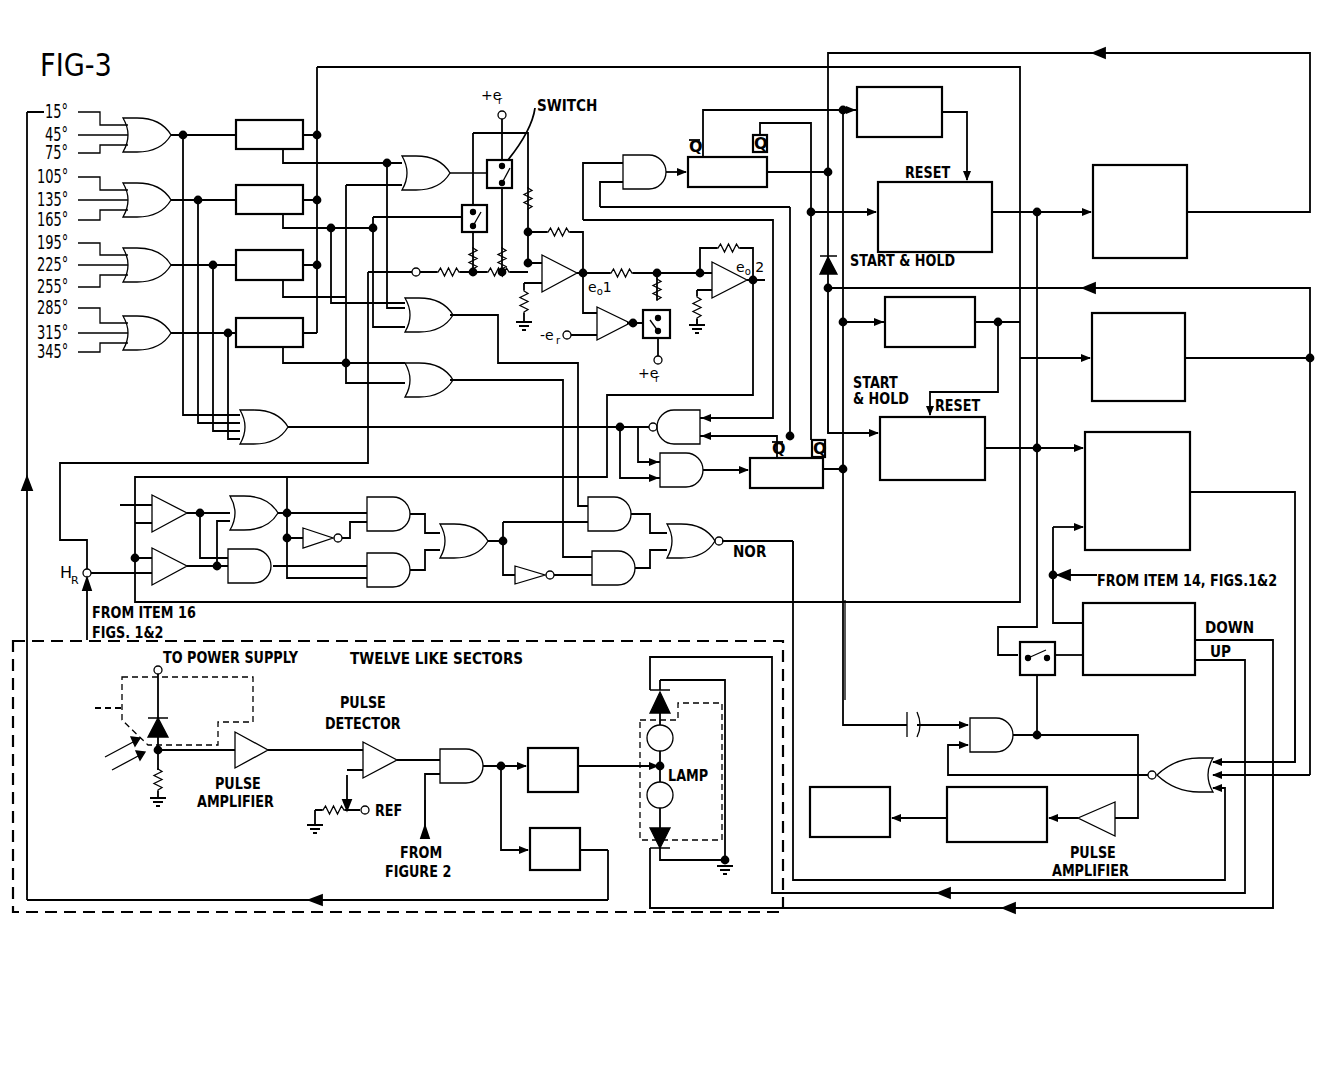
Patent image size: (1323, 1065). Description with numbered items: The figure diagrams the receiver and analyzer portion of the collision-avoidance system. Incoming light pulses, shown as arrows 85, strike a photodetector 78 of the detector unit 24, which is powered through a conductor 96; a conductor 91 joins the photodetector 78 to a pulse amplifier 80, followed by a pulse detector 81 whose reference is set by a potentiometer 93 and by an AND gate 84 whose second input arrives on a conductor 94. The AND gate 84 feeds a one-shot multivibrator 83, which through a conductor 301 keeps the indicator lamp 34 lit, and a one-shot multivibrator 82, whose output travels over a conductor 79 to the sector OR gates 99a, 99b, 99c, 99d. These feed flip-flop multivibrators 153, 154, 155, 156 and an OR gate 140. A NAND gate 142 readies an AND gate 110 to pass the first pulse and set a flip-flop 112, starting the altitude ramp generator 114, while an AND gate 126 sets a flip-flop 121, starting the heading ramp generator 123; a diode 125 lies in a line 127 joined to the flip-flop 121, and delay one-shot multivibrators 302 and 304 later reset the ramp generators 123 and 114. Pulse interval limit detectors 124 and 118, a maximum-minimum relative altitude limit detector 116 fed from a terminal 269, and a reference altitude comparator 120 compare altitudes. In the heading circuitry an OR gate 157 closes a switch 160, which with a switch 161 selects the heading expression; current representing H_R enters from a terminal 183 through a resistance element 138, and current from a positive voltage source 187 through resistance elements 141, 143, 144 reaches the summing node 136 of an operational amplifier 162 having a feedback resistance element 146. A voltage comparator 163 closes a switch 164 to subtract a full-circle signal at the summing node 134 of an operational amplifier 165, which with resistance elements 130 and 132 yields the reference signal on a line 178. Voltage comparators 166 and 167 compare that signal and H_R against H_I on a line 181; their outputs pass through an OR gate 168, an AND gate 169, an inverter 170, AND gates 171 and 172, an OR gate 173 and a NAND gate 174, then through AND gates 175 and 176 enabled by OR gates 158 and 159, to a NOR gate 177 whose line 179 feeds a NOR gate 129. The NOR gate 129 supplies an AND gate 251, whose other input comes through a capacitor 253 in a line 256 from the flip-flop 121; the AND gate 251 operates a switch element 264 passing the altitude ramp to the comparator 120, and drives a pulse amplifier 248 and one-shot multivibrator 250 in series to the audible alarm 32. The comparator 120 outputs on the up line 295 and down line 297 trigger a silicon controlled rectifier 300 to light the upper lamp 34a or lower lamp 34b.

The sector OR gate 99a is at (163, 120).
The sector OR gate 99b is at (155, 187).
The sector OR gate 99c is at (155, 253).
The sector OR gate 99d is at (155, 320).
The flip-flop multivibrator 153 is at (276, 118).
The flip-flop multivibrator 154 is at (276, 184).
The flip-flop multivibrator 155 is at (276, 249).
The flip-flop multivibrator 156 is at (276, 316).
The OR gate 140 is at (288, 426).
The OR gate 157 is at (428, 156).
The OR gate 158 is at (436, 353).
The OR gate 159 is at (449, 388).
The switch 160 is at (512, 165).
The source of positive voltage 187 is at (498, 113).
The switch 161 is at (462, 208).
The resistance element 144 is at (530, 188).
The resistance element 146 is at (558, 228).
The resistance element 141 is at (470, 250).
The resistance element 143 is at (498, 276).
The resistance element 138 is at (443, 276).
The terminal or line 183 is at (418, 270).
The summing node 136 is at (540, 260).
The operational amplifier 162 is at (547, 303).
The voltage comparator 163 is at (613, 340).
The switch 164 is at (670, 345).
The resistance element 132 is at (625, 269).
The summing node 134 is at (688, 272).
The resistance element 130 is at (723, 246).
The operational amplifier 165 is at (719, 311).
The line 178 is at (750, 337).
The AND gate 126 is at (642, 155).
The flip-flop 121 is at (688, 187).
The delay one-shot multivibrator 302 is at (942, 88).
The heading ramp generator 123 is at (992, 182).
The pulse interval limit detector 124 is at (1140, 155).
The diode 125 is at (839, 268).
The line 127 is at (836, 354).
The delay one-shot multivibrator 304 is at (936, 348).
The pulse interval limit detector 118 is at (1185, 333).
The altitude ramp generator 114 is at (940, 480).
The maximum-minimum relative altitude limit detector 116 is at (1190, 450).
The flip-flop 112 is at (777, 488).
The AND gate 110 is at (696, 457).
The NAND gate 142 is at (670, 413).
The voltage comparator 166 is at (120, 517).
The voltage comparator 167 is at (189, 557).
The OR gate 168 is at (230, 501).
The AND gate 169 is at (260, 580).
The inverter circuit 170 is at (319, 528).
The AND gate 171 is at (398, 497).
The AND gate 172 is at (405, 572).
The OR gate 173 is at (480, 519).
The NAND gate 174 is at (538, 553).
The AND gate 175 is at (634, 505).
The AND gate 176 is at (628, 583).
The NOR gate 177 is at (704, 535).
The line 179 is at (792, 580).
The line 181 is at (514, 604).
The conductor 79 is at (34, 808).
The conductor 96 is at (153, 669).
The detector unit 24 is at (159, 711).
The photodetector 78 is at (170, 728).
The incoming light pulses 85 is at (114, 757).
The conductor 91 is at (194, 756).
The pulse amplifier 80 is at (258, 740).
The pulse detector 81 is at (396, 741).
The potentiometer 93 is at (348, 815).
The AND gate 84 is at (470, 780).
The conductor 94 is at (430, 830).
The one-shot multivibrator 83 is at (555, 748).
The one-shot multivibrator 82 is at (557, 828).
The conductor 301 is at (618, 752).
The silicon controlled rectifier 300 is at (648, 704).
The upper lamp 34a is at (690, 729).
The lower lamp 34b is at (673, 801).
The indicator lamp 34 is at (722, 764).
The down line 297 is at (709, 908).
The up line 295 is at (1238, 728).
The line 256 is at (845, 648).
The capacitor 253 is at (908, 712).
The AND gate 251 is at (988, 718).
The switch element 264 is at (1045, 676).
The reference altitude comparator 120 is at (1158, 675).
The terminal 269 is at (1060, 586).
The NOR gate 129 is at (1168, 794).
The pulse amplifier 248 is at (1104, 812).
The one-shot multivibrator 250 is at (989, 842).
The audible alarm 32 is at (846, 837).